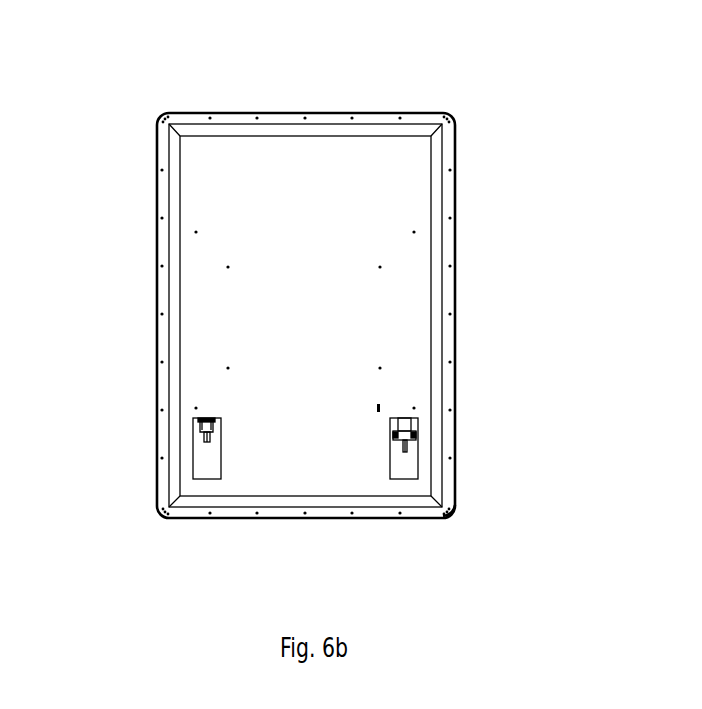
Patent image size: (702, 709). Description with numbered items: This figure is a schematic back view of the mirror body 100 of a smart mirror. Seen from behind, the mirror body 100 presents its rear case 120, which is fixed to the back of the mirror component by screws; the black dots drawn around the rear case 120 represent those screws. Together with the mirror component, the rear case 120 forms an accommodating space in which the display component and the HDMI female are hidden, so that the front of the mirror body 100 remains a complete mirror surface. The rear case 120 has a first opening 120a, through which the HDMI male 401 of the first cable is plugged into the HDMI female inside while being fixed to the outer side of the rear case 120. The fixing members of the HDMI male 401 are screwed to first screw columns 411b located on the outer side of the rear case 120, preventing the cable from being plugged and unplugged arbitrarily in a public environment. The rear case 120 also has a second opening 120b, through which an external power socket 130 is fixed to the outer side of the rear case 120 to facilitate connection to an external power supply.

The mirror body 100 is at (320, 112).
The rear case 120 is at (417, 213).
The first opening 120a is at (407, 470).
The second opening 120b is at (206, 468).
The external power socket 130 is at (193, 437).
The HDMI male 401 is at (412, 428).
The first screw column 411b is at (447, 510).